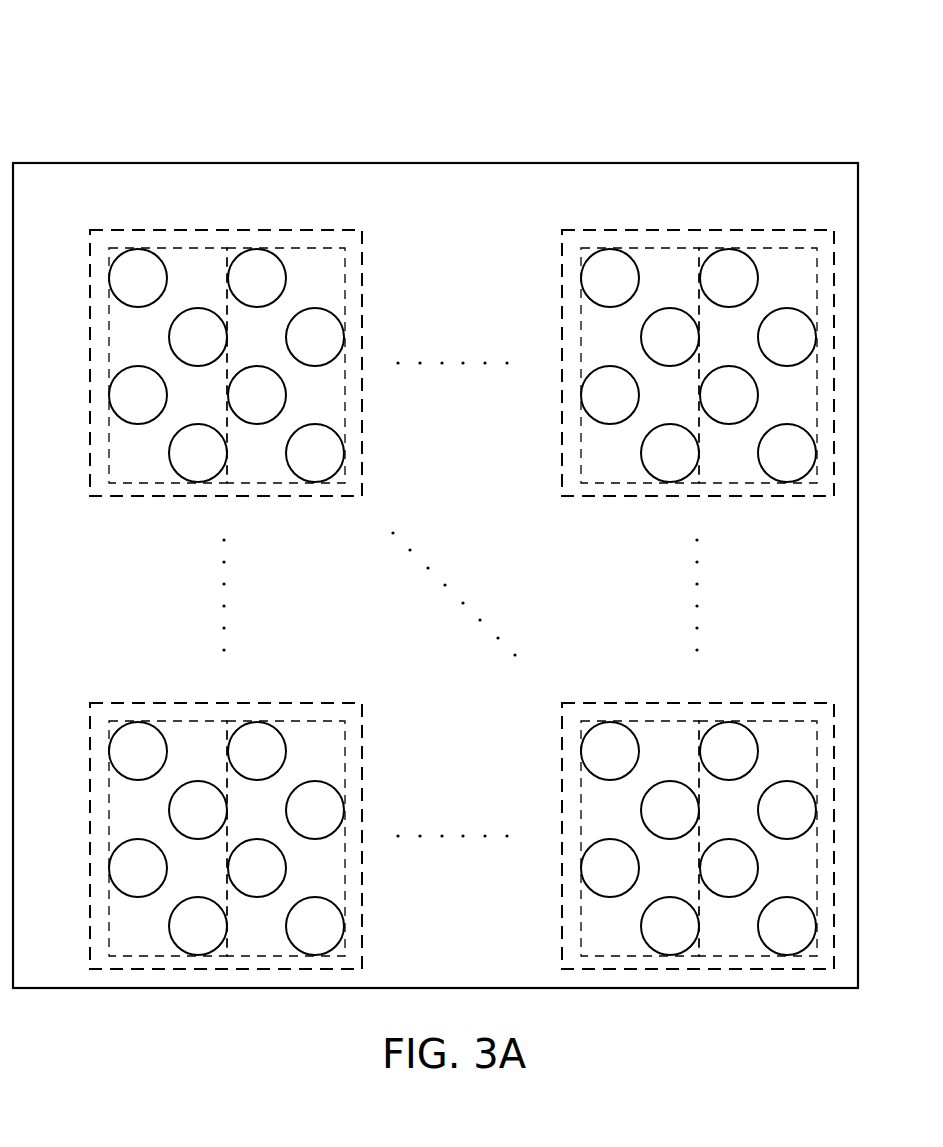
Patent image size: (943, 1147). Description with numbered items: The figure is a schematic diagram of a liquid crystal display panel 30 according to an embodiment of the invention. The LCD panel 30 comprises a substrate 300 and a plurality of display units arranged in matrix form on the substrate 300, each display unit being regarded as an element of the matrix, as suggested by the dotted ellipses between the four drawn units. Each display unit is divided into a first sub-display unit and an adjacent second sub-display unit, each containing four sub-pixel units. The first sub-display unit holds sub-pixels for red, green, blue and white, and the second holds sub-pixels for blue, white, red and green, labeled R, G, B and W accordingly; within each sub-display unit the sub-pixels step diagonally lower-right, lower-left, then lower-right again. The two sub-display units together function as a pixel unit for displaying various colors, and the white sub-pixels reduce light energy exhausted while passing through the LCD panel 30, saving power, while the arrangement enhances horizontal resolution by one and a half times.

The LCD panel 30 is at (168, 83).
The substrate 300 is at (436, 163).